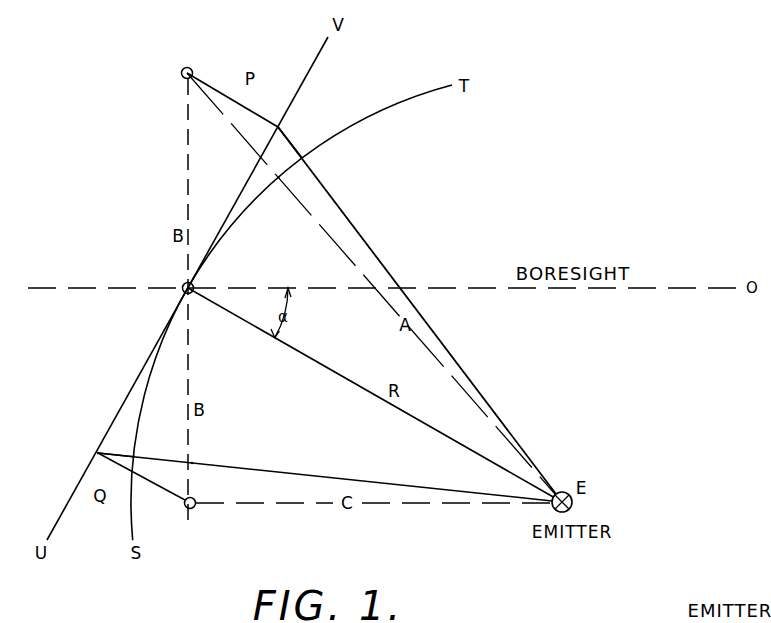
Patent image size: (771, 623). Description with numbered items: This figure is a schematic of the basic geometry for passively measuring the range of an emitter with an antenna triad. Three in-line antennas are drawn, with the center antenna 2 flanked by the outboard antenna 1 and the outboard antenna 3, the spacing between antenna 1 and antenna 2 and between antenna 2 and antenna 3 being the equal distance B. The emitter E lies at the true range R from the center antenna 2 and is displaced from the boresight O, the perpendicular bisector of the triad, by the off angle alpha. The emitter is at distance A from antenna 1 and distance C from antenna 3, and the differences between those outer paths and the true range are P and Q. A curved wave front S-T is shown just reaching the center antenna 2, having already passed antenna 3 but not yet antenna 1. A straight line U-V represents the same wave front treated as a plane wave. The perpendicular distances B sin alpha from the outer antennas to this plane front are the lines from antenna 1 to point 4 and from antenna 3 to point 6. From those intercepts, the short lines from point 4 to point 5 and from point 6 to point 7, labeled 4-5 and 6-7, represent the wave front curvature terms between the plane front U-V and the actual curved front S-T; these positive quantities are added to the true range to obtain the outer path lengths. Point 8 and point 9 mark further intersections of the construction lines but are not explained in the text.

The outboard antenna 1 is at (181, 63).
The center antenna 2 is at (174, 298).
The outboard antenna 3 is at (184, 513).
The intercept point on plane wave front 4 is at (233, 100).
The intercept point on curved wave front 5 is at (315, 160).
The wave front curvature line 4-5 is at (292, 138).
The intercept point on plane wave front 6 is at (89, 448).
The intercept point on curved wave front 7 is at (142, 448).
The wave front curvature line 6-7 is at (118, 453).
The intersection point 8 of dashed line with arc 8 is at (275, 191).
The intersection point 9 on vertical line 9 is at (200, 453).